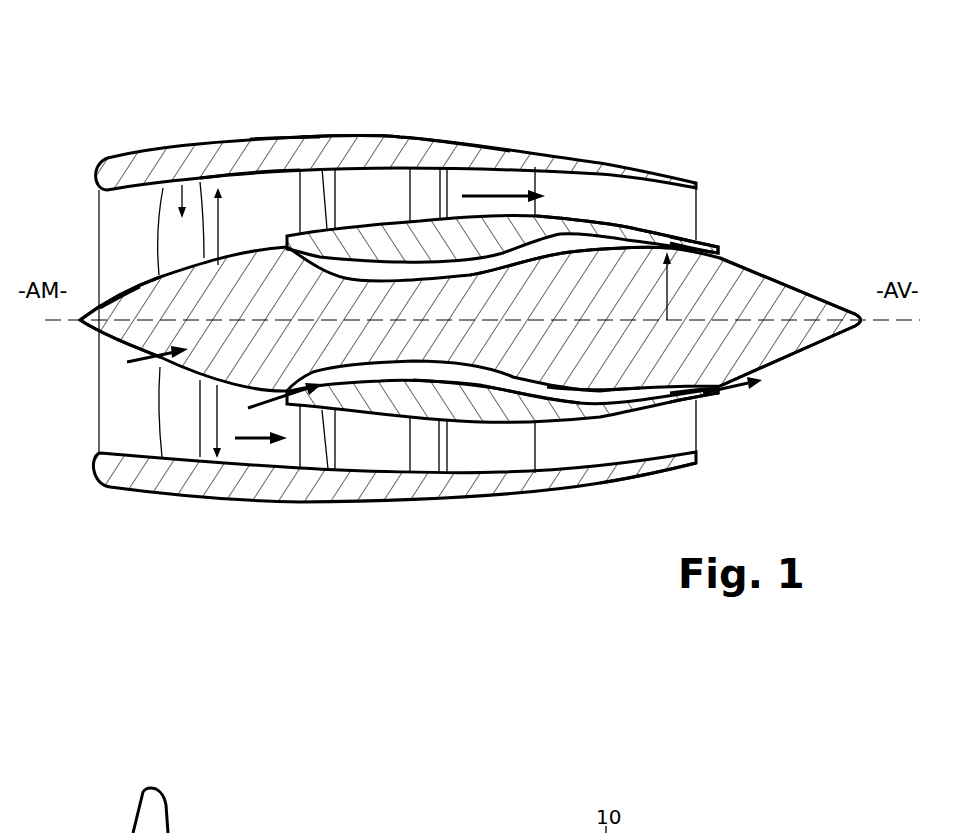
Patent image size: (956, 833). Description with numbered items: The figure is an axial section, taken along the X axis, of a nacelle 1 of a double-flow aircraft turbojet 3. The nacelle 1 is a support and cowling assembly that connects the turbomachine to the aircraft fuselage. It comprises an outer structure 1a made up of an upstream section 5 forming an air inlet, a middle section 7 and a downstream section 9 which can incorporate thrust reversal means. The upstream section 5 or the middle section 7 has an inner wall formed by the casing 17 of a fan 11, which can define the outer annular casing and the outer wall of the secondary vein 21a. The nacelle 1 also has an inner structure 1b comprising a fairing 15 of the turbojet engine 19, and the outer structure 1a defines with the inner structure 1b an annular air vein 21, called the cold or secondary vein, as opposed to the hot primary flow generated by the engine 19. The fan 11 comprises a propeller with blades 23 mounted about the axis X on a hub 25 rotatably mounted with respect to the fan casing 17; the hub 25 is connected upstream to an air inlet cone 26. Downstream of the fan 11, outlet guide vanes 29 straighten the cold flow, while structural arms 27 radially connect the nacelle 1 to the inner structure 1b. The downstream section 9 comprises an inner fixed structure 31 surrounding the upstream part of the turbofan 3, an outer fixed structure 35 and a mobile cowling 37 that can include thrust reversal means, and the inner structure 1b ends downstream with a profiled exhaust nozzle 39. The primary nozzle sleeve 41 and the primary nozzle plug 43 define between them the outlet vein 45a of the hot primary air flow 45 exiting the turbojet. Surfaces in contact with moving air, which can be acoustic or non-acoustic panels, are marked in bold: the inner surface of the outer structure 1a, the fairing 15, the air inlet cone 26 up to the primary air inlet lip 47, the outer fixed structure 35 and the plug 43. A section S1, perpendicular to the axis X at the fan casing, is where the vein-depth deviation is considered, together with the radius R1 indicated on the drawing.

The nacelle 1 is at (210, 102).
The outer structure 1a is at (320, 128).
The inner structure 1b is at (677, 226).
The double-flow aircraft turbojet 3 is at (147, 355).
The upstream section 5 is at (100, 160).
The middle section 7 is at (392, 137).
The downstream section 9 is at (605, 490).
The fan 11 is at (182, 185).
The fairing 15 is at (548, 205).
The fan casing 17 is at (240, 170).
The turbojet engine 19 is at (570, 277).
The annular air vein 21 is at (478, 190).
The secondary vein 21a is at (587, 200).
The blades 23 is at (177, 417).
The hub 25 is at (153, 332).
The air inlet cone 26 is at (123, 296).
The structural arms 27 is at (425, 450).
The outlet guide vanes 29 is at (312, 447).
The inner fixed structure 31 is at (597, 385).
The outer fixed structure 35 is at (490, 427).
The mobile cowling 37 is at (638, 468).
The profiled exhaust nozzle 39 is at (808, 230).
The primary nozzle sleeve 41 is at (710, 397).
The primary nozzle plug 43 is at (820, 310).
The primary air flow 45 is at (730, 388).
The primary flow vein 45a is at (500, 378).
The primary air inlet lip 47 is at (255, 412).
The radius R1 is at (683, 286).
The section S1 is at (220, 230).
The axis X is at (882, 330).